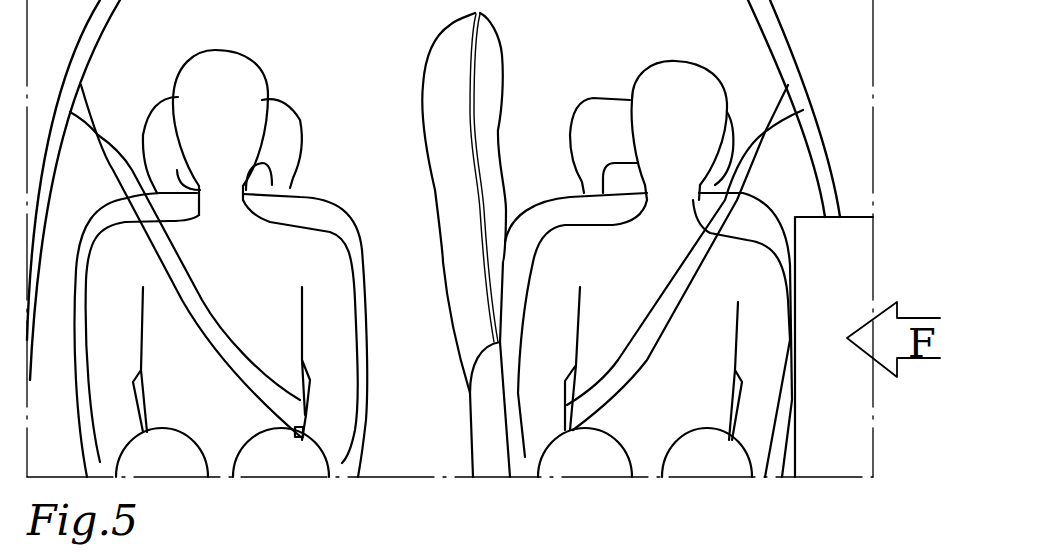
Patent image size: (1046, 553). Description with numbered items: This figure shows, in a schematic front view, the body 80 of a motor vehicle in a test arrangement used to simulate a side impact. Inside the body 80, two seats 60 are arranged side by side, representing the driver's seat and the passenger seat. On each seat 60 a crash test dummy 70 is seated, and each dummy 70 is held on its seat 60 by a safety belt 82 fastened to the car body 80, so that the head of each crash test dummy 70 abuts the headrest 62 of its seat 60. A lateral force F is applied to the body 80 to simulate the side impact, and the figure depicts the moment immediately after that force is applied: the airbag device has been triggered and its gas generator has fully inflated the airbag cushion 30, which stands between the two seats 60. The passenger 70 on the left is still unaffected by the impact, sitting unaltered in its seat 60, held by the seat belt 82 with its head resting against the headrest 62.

The airbag cushion 30 is at (490, 70).
The seat 60 is at (324, 217).
The headrest 62 is at (283, 125).
The crash test dummy 70 is at (248, 80).
The body 80 is at (96, 38).
The safety belt 82 is at (197, 303).